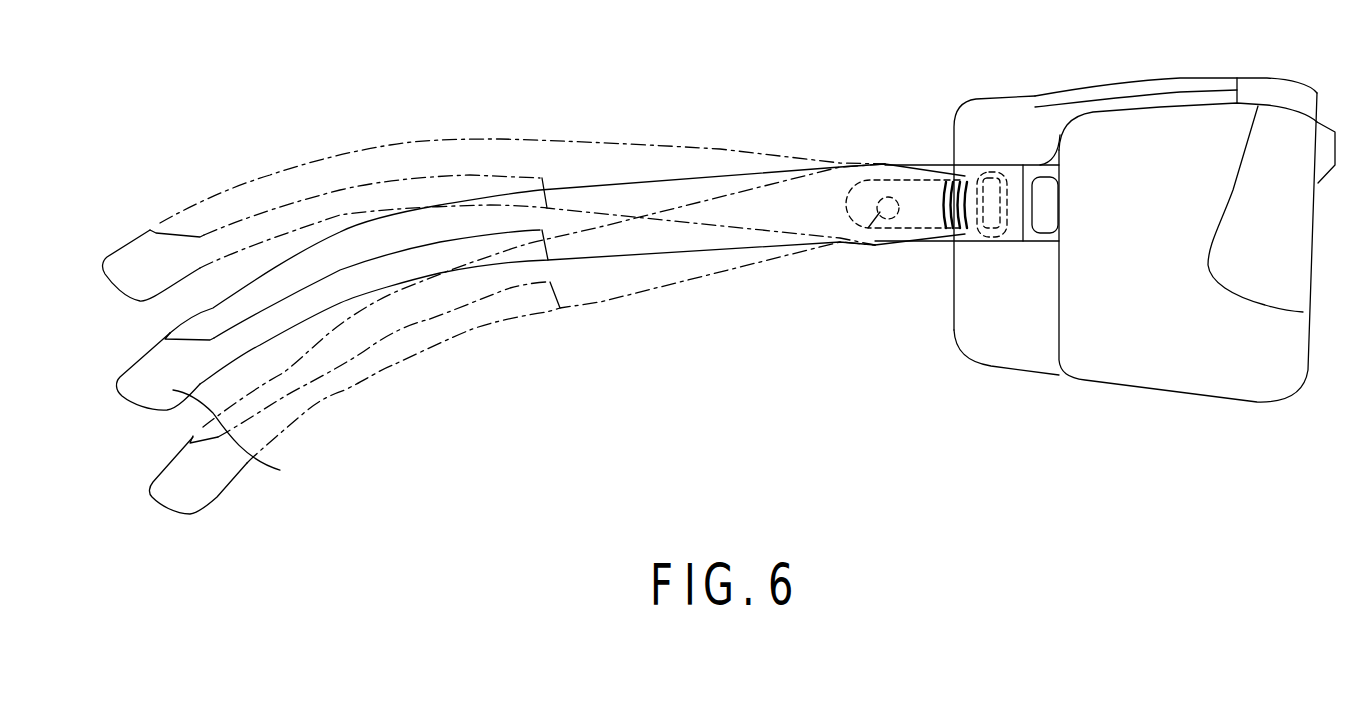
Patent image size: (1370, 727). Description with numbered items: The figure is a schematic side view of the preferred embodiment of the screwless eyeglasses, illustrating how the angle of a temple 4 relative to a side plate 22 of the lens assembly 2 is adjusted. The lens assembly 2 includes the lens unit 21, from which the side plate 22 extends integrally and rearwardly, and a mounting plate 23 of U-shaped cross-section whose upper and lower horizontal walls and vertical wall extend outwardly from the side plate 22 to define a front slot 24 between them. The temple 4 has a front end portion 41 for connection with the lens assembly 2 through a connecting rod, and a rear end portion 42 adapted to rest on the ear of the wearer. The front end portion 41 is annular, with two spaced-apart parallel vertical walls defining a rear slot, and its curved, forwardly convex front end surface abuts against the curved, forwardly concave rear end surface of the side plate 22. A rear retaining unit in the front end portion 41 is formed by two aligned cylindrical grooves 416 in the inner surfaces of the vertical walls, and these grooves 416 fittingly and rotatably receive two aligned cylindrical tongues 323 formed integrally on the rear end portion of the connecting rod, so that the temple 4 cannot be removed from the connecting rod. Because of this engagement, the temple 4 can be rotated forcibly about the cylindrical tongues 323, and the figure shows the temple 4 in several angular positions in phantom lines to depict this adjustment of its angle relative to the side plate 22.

The lens assembly 2 is at (1105, 245).
The lens unit 21 is at (1153, 362).
The side plate 22 is at (1007, 353).
The mounting plate 23 is at (1040, 160).
The front slot 24 is at (1043, 192).
The temple 4 is at (657, 157).
The front end portion 41 is at (927, 247).
The rear end portion 42 is at (244, 439).
The cylindrical tongue 323 is at (888, 196).
The cylindrical groove 416 is at (868, 230).